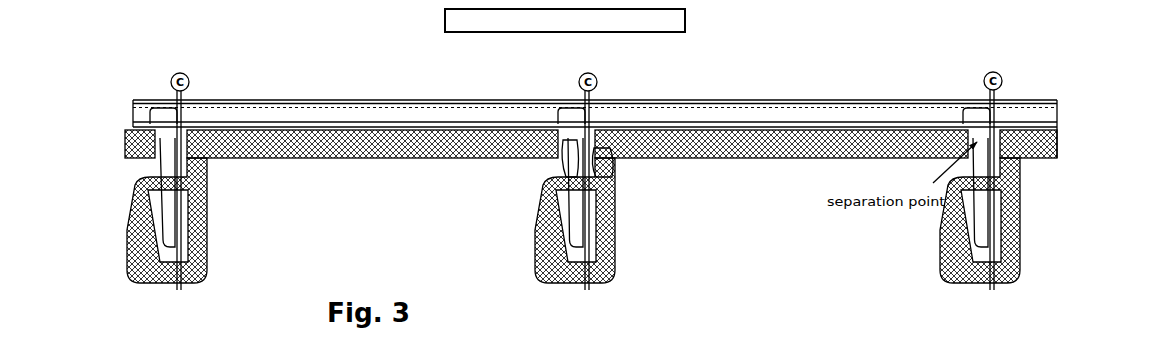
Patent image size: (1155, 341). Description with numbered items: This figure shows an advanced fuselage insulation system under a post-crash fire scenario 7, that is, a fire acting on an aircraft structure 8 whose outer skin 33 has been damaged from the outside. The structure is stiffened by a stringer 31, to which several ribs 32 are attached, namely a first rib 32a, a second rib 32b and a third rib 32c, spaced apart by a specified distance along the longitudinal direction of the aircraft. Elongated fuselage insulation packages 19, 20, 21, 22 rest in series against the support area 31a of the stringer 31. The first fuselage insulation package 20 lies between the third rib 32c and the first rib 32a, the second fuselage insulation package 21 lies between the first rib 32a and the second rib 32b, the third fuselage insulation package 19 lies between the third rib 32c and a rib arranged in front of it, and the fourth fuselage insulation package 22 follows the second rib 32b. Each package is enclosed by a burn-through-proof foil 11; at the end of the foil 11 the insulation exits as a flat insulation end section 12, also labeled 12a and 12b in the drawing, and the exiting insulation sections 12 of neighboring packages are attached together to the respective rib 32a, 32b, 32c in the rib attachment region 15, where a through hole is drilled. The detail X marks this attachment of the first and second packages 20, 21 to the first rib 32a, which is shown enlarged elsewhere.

The post-crash fire scenario 7 is at (565, 45).
The aircraft structure 8 is at (888, 80).
The foil 11 is at (561, 189).
The insulation end section 12 is at (123, 192).
The upper channel portion 12a is at (165, 168).
The lower channel portion 12b is at (163, 160).
The rib attachment region 15 is at (562, 165).
The third fuselage insulation package 19 is at (1040, 160).
The first fuselage insulation package 20 is at (615, 197).
The second fuselage insulation package 21 is at (208, 197).
The fourth fuselage insulation package 22 is at (123, 155).
The stringer 31 is at (595, 134).
The support area of the stringer 31a is at (293, 125).
The rib 32 is at (622, 190).
The first rib 32a is at (613, 240).
The second rib 32b is at (157, 232).
The third rib 32c is at (973, 238).
The outer skin 33 is at (382, 102).
The detail X is at (567, 170).